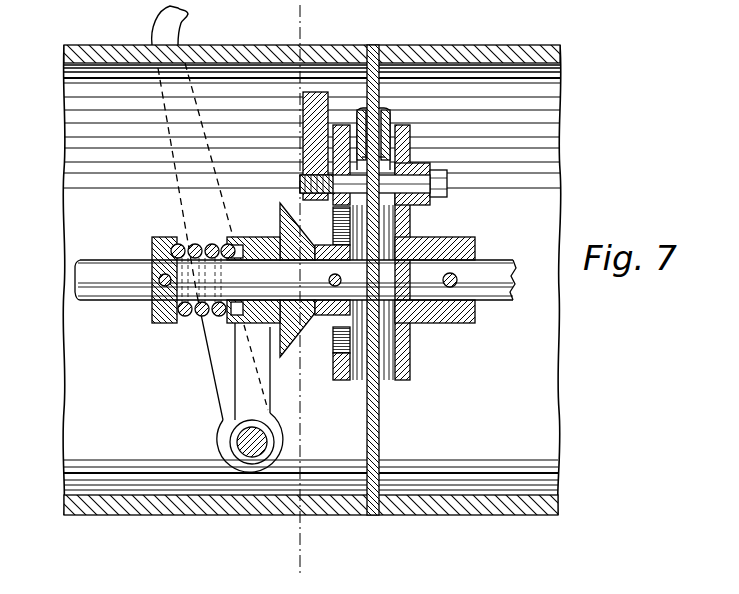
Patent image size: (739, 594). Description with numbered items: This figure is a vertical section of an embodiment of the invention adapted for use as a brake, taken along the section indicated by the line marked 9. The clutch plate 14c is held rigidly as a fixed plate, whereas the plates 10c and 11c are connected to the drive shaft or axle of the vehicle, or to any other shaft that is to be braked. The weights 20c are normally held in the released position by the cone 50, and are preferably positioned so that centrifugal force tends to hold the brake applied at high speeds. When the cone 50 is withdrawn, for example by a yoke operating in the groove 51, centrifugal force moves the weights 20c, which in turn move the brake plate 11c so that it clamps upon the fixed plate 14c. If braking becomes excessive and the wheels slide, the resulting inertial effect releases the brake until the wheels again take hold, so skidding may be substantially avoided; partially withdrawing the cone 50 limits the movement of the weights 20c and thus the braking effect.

The section line 9- 9 is at (306, 22).
The plate 10c is at (412, 136).
The brake plate 11c is at (341, 125).
The clutch plate 14c is at (379, 96).
The weights 20c is at (303, 112).
The cone 50 is at (292, 202).
The groove 51 is at (253, 238).